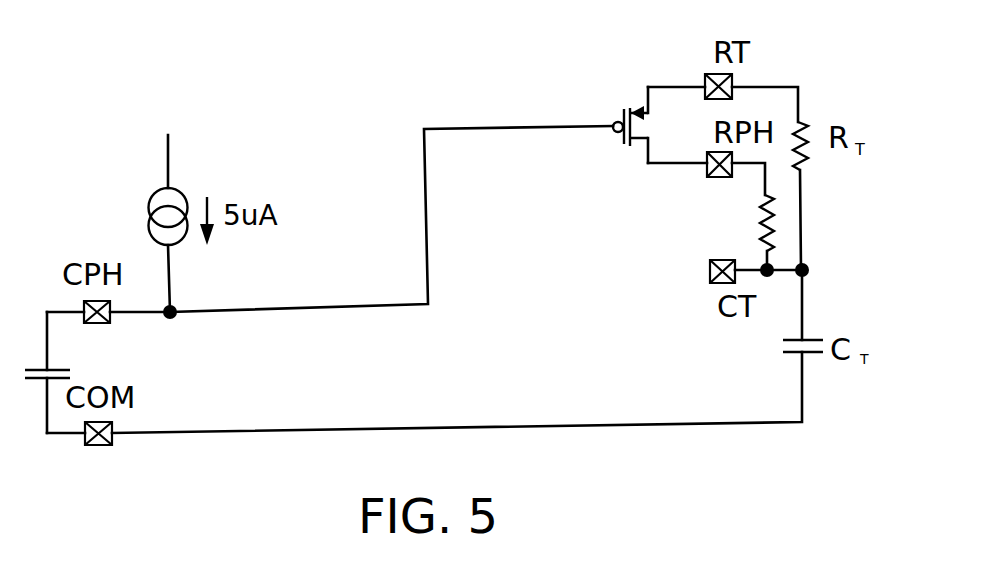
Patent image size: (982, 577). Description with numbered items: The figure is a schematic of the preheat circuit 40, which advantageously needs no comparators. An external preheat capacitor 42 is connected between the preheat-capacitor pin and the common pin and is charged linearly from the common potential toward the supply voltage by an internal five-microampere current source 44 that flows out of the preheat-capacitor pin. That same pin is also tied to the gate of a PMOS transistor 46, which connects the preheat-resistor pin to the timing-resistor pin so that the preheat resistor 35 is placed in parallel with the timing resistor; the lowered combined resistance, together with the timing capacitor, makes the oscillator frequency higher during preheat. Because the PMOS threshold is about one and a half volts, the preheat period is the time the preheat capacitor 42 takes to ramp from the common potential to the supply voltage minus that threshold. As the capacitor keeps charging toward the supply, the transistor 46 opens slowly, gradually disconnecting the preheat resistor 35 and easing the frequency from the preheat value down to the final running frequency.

The preheat circuit 40 is at (462, 95).
The current source 44 is at (182, 189).
The capacitor 42 is at (68, 370).
The PMOS transistor 46 is at (616, 133).
The resistor 35 is at (767, 194).